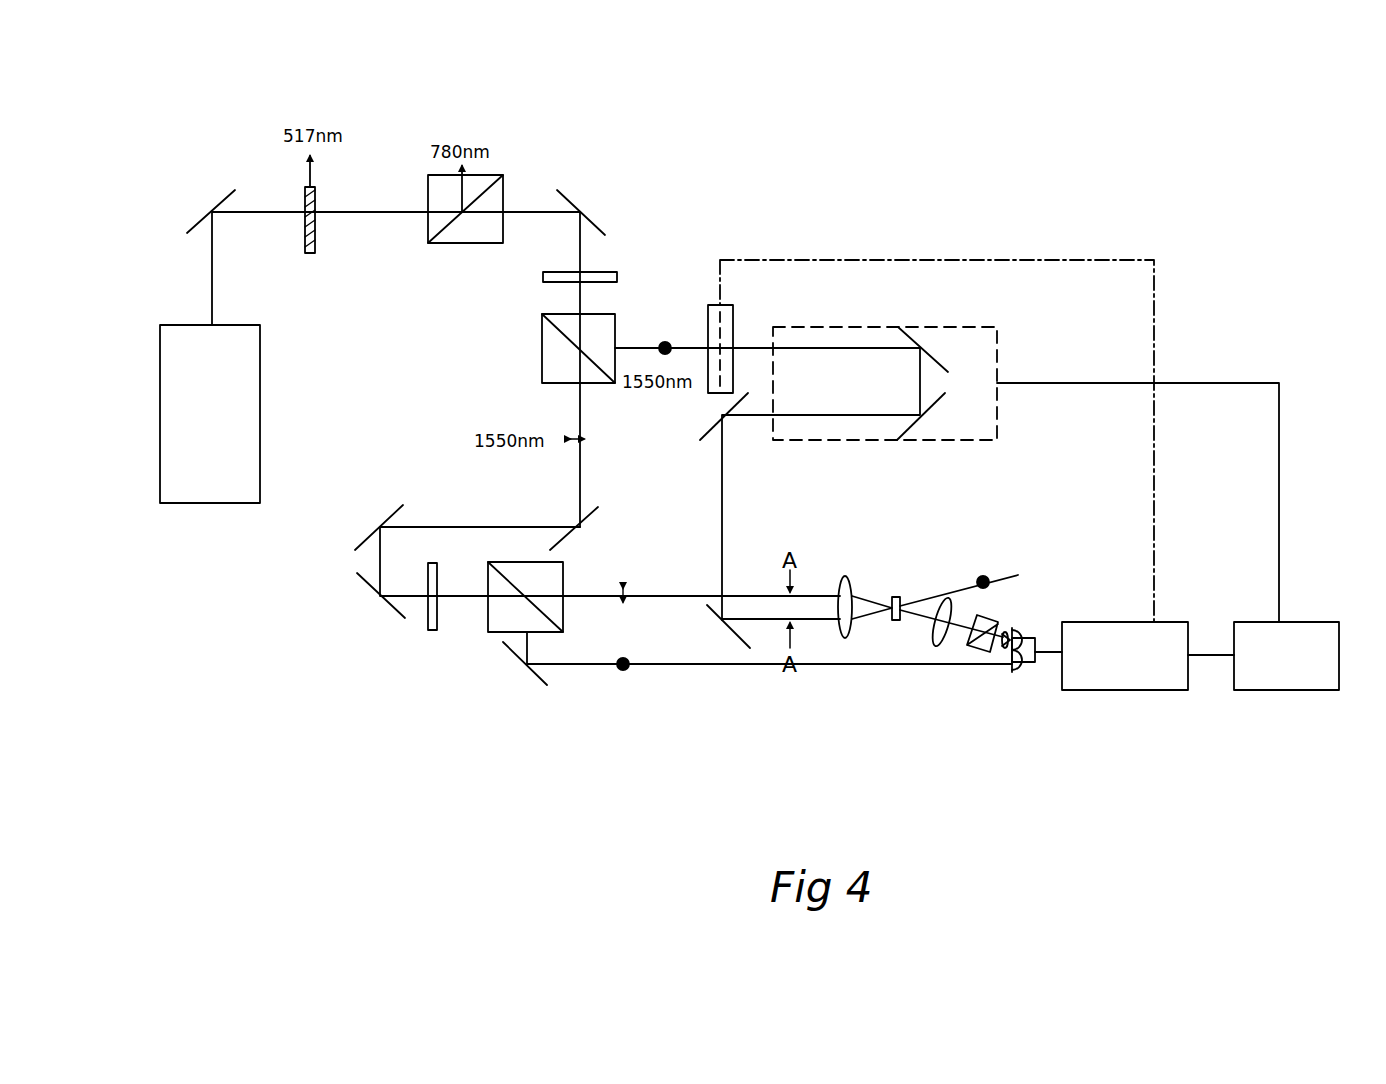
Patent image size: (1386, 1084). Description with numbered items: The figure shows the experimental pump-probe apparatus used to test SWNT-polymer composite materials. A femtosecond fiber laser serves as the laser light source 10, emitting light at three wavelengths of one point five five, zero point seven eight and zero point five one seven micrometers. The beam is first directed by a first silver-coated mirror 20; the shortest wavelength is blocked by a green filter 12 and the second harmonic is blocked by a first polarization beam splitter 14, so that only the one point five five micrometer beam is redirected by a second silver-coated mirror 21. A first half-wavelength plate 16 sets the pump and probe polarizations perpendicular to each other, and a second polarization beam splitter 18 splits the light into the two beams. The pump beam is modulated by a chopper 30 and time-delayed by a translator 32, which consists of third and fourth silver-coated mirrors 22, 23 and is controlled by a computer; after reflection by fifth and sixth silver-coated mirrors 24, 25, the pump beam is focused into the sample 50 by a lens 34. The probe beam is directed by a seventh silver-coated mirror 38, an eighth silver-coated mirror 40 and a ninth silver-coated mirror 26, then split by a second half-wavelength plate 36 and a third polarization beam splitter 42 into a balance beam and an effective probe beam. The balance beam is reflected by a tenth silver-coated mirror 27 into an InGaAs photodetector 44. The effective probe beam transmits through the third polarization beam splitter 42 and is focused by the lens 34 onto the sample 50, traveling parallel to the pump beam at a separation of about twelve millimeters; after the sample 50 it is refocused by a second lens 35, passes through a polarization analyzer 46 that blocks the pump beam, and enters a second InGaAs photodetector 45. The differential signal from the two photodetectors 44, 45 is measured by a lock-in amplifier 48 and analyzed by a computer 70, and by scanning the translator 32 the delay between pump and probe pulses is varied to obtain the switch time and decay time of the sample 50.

The laser light source 10 is at (192, 405).
The green filter 12 is at (310, 253).
The first polarization beam splitter 14 is at (452, 243).
The first half-wavelength plate 16 is at (613, 268).
The second polarization beam splitter 18 is at (542, 348).
The first silver-coated mirror 20 is at (215, 207).
The second silver-coated mirror 21 is at (575, 200).
The third silver-coated mirror 22 is at (935, 358).
The fourth silver-coated mirror 23 is at (928, 420).
The fifth silver-coated mirror 24 is at (712, 430).
The sixth silver-coated mirror 25 is at (728, 636).
The ninth silver-coated mirror 26 is at (357, 585).
The tenth silver-coated mirror 27 is at (540, 682).
The chopper 30 is at (713, 306).
The translator 32 is at (846, 442).
The lens 34 is at (845, 576).
The second lens 35 is at (936, 640).
The second half-wavelength plate 36 is at (432, 632).
The seventh silver-coated mirror 38 is at (597, 508).
The eighth silver-coated mirror 40 is at (383, 515).
The third polarization beam splitter 42 is at (488, 620).
The InGaAs photodetector 44 is at (1014, 676).
The second InGaAs photodetector 45 is at (1018, 630).
The polarization analyzer 46 is at (1000, 618).
The lock-in amplifier 48 is at (1127, 667).
The sample 50 is at (897, 597).
The computer 70 is at (1285, 662).